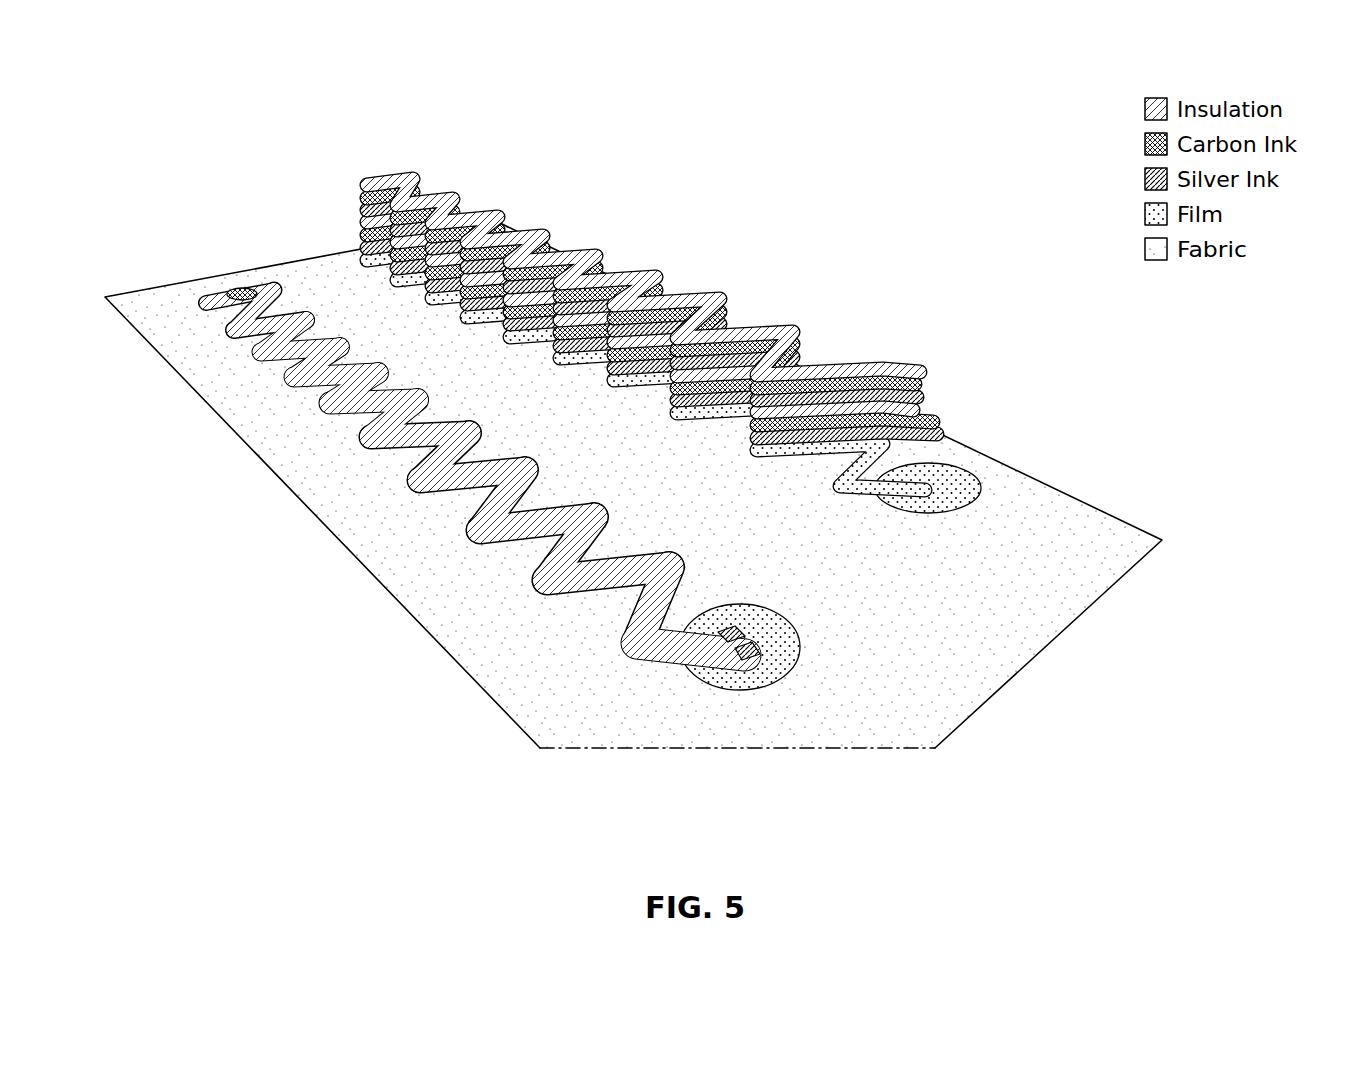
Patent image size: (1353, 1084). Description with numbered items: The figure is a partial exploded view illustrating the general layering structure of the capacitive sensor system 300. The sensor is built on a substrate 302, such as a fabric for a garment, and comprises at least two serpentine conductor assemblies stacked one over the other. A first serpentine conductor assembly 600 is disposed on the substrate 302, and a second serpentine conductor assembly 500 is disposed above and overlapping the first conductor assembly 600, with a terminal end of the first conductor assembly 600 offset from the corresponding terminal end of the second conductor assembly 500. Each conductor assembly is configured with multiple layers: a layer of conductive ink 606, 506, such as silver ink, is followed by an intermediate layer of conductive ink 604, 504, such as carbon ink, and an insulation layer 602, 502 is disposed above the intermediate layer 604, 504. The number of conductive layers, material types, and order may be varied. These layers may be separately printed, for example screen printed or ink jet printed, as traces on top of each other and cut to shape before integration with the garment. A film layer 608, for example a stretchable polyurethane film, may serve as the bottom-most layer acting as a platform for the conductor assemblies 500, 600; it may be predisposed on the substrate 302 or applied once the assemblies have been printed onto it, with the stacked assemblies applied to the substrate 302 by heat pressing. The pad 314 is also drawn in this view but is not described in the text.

The capacitive sensor system 300 is at (593, 208).
The substrate 302 is at (556, 440).
The film pad 314 is at (955, 497).
The second serpentine conductor assembly 500 is at (756, 289).
The insulation layer 502 is at (918, 374).
The intermediate layer of conductive ink 504 is at (915, 388).
The layer of conductive ink 506 is at (920, 398).
The first serpentine conductor assembly 600 is at (756, 344).
The insulation layer 602 is at (917, 414).
The intermediate layer of conductive ink 604 is at (937, 427).
The layer of conductive ink 606 is at (940, 443).
The film layer 608 is at (757, 460).